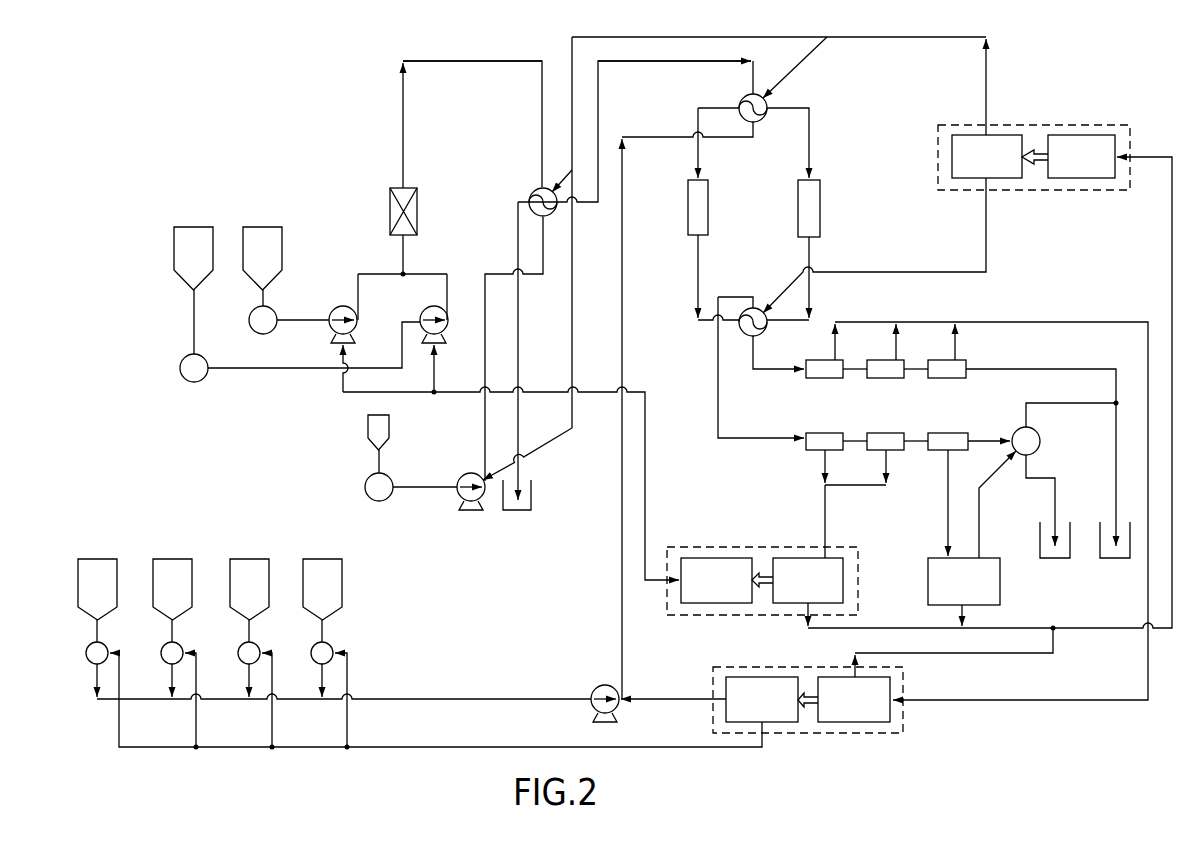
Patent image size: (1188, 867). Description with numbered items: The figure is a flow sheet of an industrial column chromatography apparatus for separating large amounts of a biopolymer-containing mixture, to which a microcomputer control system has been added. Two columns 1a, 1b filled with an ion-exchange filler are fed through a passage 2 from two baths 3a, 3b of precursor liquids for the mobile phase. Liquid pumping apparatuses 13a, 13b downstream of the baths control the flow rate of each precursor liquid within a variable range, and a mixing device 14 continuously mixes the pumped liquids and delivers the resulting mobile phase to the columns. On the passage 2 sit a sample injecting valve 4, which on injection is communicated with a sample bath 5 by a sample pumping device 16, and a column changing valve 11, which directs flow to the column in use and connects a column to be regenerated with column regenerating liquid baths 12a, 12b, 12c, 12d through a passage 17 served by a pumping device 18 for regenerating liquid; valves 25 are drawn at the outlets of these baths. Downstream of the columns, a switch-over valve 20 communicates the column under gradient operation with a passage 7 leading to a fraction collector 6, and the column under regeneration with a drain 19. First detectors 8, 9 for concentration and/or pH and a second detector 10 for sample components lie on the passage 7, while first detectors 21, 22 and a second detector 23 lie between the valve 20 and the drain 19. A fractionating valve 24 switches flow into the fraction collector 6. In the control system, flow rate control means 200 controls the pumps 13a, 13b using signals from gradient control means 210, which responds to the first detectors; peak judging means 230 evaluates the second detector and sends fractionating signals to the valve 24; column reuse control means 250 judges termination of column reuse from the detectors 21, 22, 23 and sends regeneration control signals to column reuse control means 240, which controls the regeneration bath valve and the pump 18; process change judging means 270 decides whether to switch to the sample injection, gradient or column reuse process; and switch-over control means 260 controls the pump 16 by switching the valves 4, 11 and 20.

The column 1a is at (708, 207).
The column 1b is at (820, 207).
The passage 2 is at (494, 61).
The precursor liquid bath 3a is at (194, 226).
The precursor liquid bath 3b is at (263, 226).
The sample injecting valve 4 is at (533, 189).
The sample bath 5 is at (389, 427).
The fraction collector 6 is at (1066, 558).
The passage 7 is at (718, 387).
The first detector 8 is at (826, 433).
The first detector 9 is at (881, 433).
The second detector 10 is at (953, 433).
The column changing valve 11 is at (744, 97).
The column regenerating liquid bath 12a is at (105, 559).
The column regenerating liquid bath 12b is at (180, 559).
The column regenerating liquid bath 12c is at (256, 559).
The column regenerating liquid bath 12d is at (329, 559).
The liquid pumping apparatus 13a is at (420, 310).
The liquid pumping apparatus 13b is at (330, 310).
The mixing device 14 is at (417, 210).
The sample pumping device 16 is at (473, 512).
The passage 17 is at (620, 528).
The pumping device for regenerated liquid 18 is at (604, 685).
The drain 19 is at (1108, 558).
The switch-over valve 20 is at (762, 305).
The first detector 21 is at (828, 360).
The first detector 22 is at (880, 362).
The second detector 23 is at (942, 362).
The fractionating valve 24 is at (1040, 441).
The catalyst metering valves 25 is at (103, 645).
The flow rate control means 200 is at (716, 580).
The gradient control means 210 is at (808, 580).
The peak judging means 230 is at (964, 581).
The column reuse control means 240 is at (762, 699).
The column reuse control means 250 is at (854, 699).
The switch-over control means 260 is at (987, 156).
The process change judging means 270 is at (1081, 156).